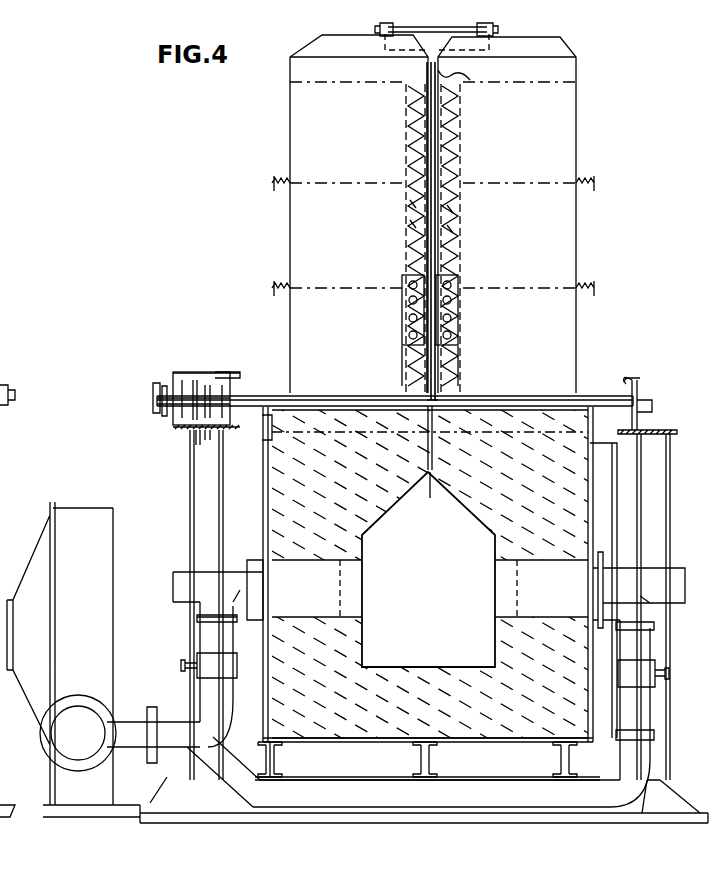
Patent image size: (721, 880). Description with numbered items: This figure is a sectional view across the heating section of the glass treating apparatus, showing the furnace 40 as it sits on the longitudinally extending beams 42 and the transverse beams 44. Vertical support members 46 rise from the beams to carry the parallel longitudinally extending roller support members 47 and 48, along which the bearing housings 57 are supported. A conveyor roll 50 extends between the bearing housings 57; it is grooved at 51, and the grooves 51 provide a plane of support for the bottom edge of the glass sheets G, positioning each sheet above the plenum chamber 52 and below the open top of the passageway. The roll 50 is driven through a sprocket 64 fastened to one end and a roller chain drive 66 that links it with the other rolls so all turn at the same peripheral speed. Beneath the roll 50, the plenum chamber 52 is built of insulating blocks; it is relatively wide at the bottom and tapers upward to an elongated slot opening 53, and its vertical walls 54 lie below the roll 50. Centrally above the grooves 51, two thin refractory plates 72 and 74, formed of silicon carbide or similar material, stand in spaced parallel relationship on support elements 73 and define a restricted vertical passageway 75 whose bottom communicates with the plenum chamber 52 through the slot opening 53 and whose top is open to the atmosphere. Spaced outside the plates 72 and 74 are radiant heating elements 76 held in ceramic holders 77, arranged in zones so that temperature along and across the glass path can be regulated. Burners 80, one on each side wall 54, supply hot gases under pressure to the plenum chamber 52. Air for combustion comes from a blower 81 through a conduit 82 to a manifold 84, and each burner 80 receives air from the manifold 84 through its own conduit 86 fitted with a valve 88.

The furnace 40 is at (290, 158).
The longitudinally extending beams 42 is at (421, 759).
The transverse beams 44 is at (675, 780).
The vertical support members 46 is at (190, 497).
The roller support member 47 is at (225, 374).
The roller support member 48 is at (635, 381).
The conveyor rolls 50 is at (259, 395).
The grooves 51 is at (432, 398).
The plenum chamber 52 is at (428, 569).
The elongated slot opening 53 is at (430, 496).
The vertical walls 54 is at (272, 478).
The bearing housings 57 is at (193, 375).
The sprockets 64 is at (162, 395).
The roller chain drives 66 is at (157, 414).
The plate 72 is at (407, 290).
The support elements 73 is at (410, 382).
The plate 74 is at (462, 300).
The restricted vertical passageway 75 is at (468, 80).
The radiant heating elements 76 is at (420, 175).
The ceramic holders 77 is at (425, 242).
The burners 80 is at (168, 588).
The blower 81 is at (113, 545).
The conduit 82 is at (120, 733).
The manifold 84 is at (227, 780).
The conduit 86 is at (205, 635).
The valve 88 is at (188, 665).
The glass sheets G is at (430, 76).